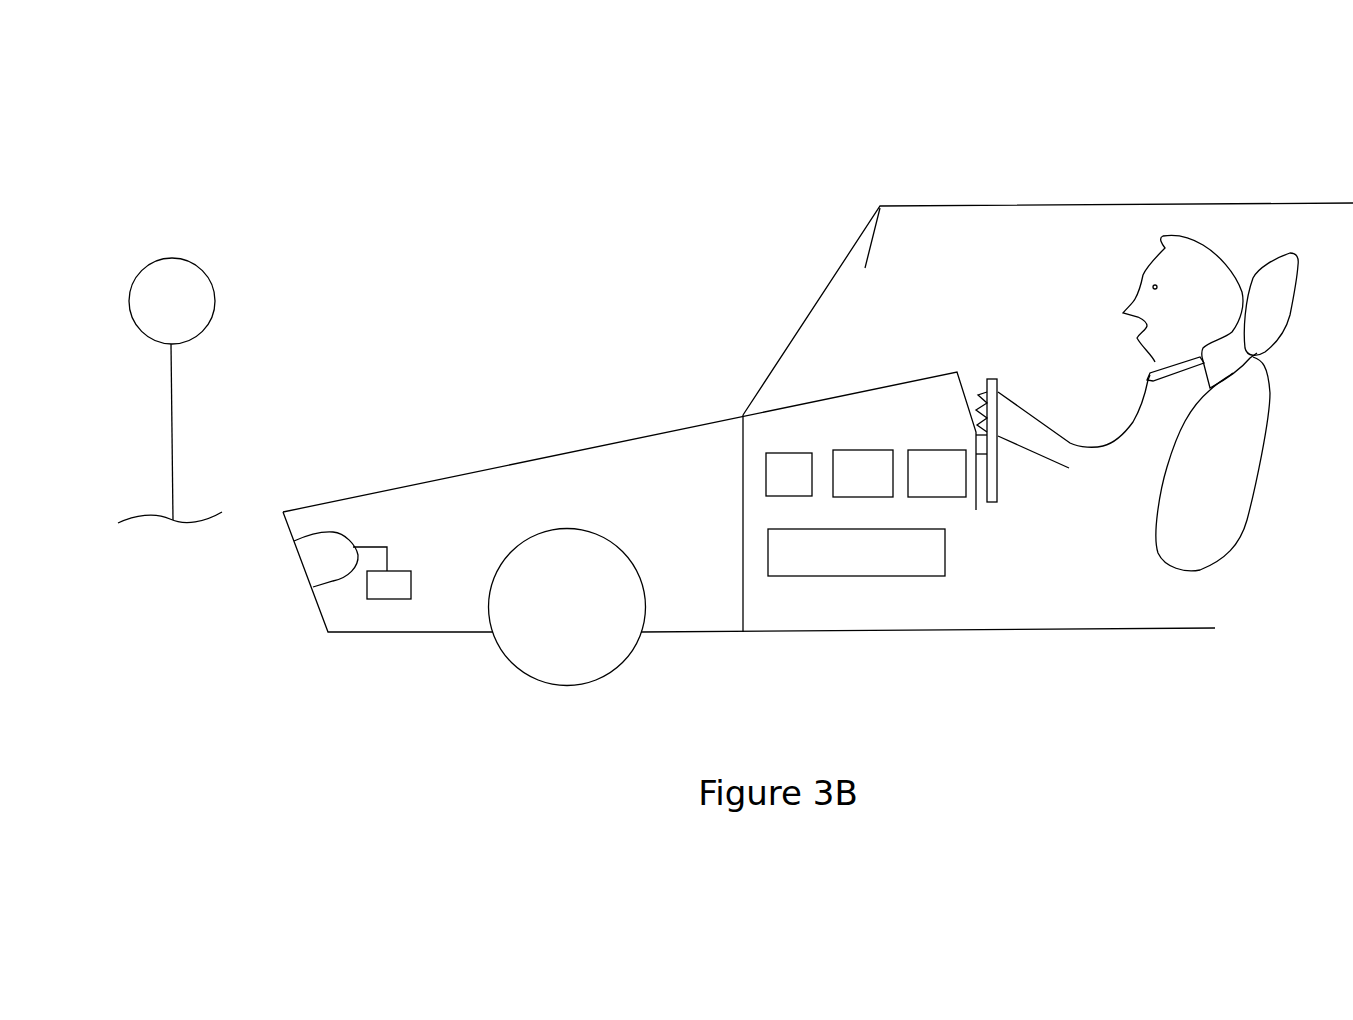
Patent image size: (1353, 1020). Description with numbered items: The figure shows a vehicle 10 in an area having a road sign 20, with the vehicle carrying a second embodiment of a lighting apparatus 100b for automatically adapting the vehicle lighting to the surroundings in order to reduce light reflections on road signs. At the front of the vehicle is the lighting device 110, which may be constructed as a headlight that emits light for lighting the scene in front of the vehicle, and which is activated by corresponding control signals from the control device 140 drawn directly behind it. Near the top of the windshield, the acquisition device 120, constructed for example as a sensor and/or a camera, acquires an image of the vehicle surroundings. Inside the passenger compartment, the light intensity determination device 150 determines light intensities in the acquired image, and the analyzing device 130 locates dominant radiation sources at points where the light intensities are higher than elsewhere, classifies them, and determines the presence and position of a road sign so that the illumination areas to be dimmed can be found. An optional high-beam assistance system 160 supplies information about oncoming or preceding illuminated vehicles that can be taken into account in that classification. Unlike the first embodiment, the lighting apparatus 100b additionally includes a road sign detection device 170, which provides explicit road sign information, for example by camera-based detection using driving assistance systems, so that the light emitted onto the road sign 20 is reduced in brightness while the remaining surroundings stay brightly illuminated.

The vehicle 10 is at (1072, 164).
The road sign 20 is at (221, 264).
The lighting apparatus 100b is at (777, 436).
The lighting device 110 is at (317, 562).
The acquisition device 120 is at (877, 233).
The analyzing device 130 is at (828, 577).
The control device 140 is at (392, 599).
The light intensity determination device 150 is at (766, 470).
The high-beam assistance system 160 is at (858, 450).
The road sign detection device 170 is at (930, 450).